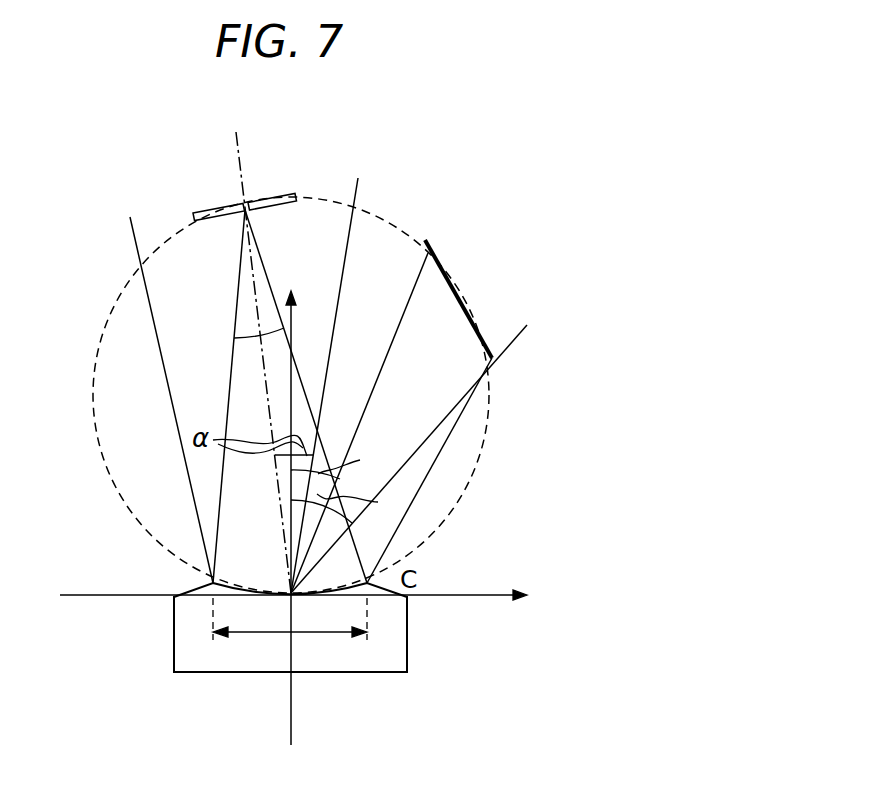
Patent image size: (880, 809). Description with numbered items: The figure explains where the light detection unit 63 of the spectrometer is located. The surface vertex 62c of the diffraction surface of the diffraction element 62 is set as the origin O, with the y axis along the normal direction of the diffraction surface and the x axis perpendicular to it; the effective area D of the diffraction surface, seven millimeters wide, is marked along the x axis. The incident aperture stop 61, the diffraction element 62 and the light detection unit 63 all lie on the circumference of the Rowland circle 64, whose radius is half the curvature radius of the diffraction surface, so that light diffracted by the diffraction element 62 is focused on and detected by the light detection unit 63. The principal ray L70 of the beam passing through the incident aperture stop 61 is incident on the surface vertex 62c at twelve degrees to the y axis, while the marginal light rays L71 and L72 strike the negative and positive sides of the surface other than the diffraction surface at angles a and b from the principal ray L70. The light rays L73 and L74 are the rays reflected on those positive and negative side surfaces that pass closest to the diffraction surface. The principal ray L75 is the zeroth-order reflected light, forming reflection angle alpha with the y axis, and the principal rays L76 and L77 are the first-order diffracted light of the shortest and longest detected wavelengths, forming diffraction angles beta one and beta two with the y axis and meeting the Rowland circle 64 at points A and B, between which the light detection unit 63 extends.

The incident aperture stop 61 is at (205, 210).
The diffraction element 62 is at (407, 655).
The surface vertex 62c is at (283, 590).
The light detection unit 63 is at (462, 288).
The Rowland circle 64 is at (103, 465).
The principal ray L70 is at (267, 393).
The marginal light ray L71 is at (240, 277).
The marginal light ray L72 is at (253, 233).
The light ray L73 is at (425, 496).
The light ray L74 is at (152, 317).
The principal ray of reflected light L75 is at (354, 195).
The principal ray of first-order diffracted light L76 is at (414, 284).
The principal ray of first-order diffracted light L77 is at (470, 378).
The origin O is at (301, 504).
The effective area D is at (290, 630).